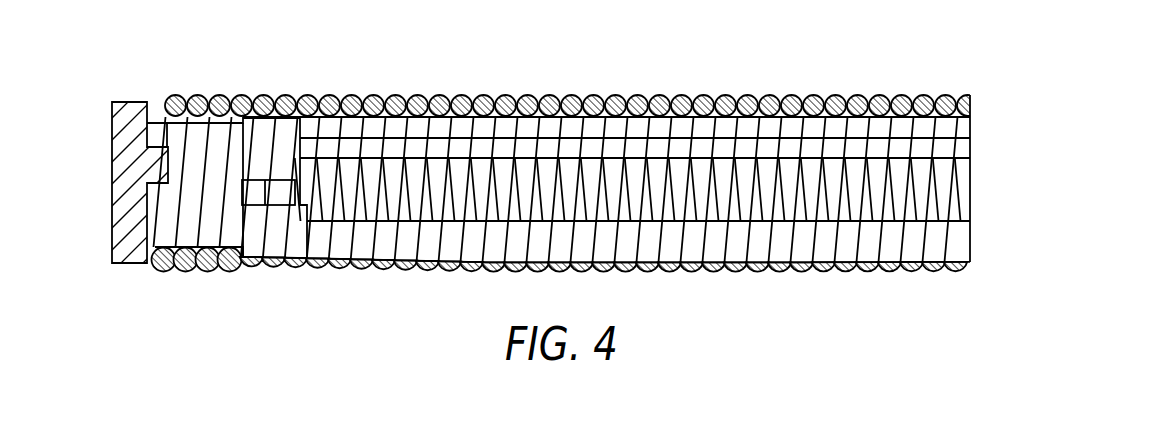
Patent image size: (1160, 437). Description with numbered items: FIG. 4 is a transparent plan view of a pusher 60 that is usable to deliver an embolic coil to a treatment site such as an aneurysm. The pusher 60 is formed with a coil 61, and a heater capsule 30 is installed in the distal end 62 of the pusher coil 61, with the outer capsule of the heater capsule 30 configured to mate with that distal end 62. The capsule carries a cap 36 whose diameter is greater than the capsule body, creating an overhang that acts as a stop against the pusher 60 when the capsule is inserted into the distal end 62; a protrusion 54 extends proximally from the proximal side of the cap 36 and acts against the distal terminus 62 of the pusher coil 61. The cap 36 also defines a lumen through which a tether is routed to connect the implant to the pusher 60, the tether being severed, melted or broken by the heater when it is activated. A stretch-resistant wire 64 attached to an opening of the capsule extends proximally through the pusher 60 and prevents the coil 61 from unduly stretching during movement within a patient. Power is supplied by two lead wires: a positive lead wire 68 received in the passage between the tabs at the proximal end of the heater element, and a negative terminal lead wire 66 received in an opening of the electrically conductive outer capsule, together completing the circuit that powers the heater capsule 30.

The heater capsule 30 is at (131, 283).
The cap 36 is at (130, 101).
The protrusion 54 is at (158, 162).
The pusher 60 is at (638, 63).
The coil 61 is at (373, 96).
The distal end 62 is at (167, 272).
The stretch-resistant wire 64 is at (951, 139).
The negative terminal lead wire 66 is at (972, 125).
The lead wire 68 is at (970, 245).